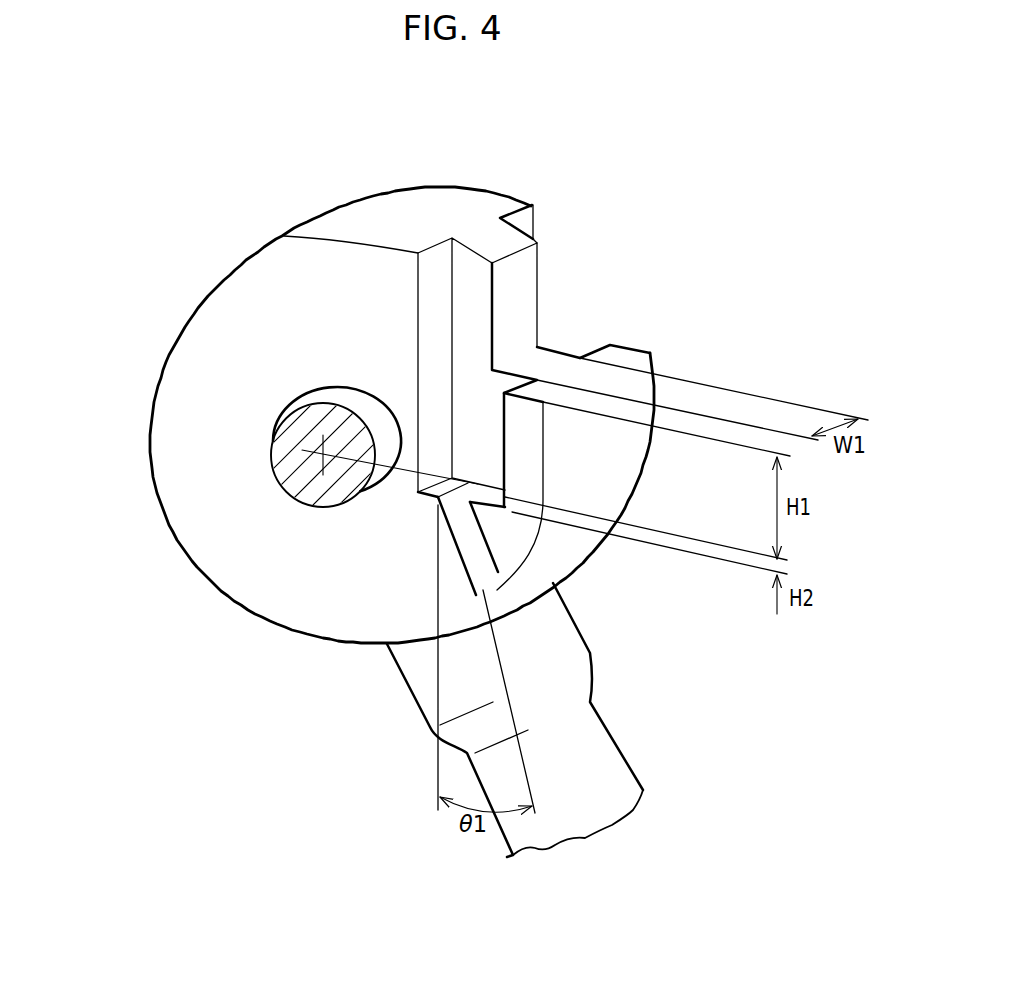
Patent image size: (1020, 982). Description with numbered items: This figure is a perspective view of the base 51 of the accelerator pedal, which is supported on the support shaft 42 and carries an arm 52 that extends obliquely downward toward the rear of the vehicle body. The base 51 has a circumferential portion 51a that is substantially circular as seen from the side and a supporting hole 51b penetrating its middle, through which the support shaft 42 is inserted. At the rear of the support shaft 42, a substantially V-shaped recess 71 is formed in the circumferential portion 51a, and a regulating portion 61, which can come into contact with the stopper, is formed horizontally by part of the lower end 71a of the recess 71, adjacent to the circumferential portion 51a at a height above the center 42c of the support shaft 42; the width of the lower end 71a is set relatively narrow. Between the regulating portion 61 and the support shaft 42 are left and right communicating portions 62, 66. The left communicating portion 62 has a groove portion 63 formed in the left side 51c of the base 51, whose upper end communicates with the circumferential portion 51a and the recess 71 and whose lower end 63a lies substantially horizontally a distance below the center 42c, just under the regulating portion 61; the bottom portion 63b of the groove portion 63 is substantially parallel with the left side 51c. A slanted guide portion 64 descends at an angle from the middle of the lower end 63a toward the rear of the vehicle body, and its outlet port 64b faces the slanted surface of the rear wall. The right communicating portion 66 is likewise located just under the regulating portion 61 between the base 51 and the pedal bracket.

The support shaft 42 is at (292, 417).
The center of the support shaft 42c is at (292, 497).
The base 51 is at (158, 363).
The circumferential portion 51a is at (404, 210).
The supporting hole 51b is at (346, 389).
The left side of the base 51c is at (223, 427).
The arm 52 is at (597, 774).
The regulating portion 61 is at (595, 372).
The left communicating portion 62 is at (522, 525).
The groove portion 63 is at (543, 441).
The lower end of the groove portion 63a is at (433, 492).
The bottom portion of the groove portion 63b is at (468, 385).
The slanted guide portion 64 is at (417, 655).
The outlet port 64b is at (495, 592).
The right communicating portion 66 is at (588, 352).
The substantially V-shaped recess 71 is at (554, 350).
The lower end of the recess 71a is at (553, 362).